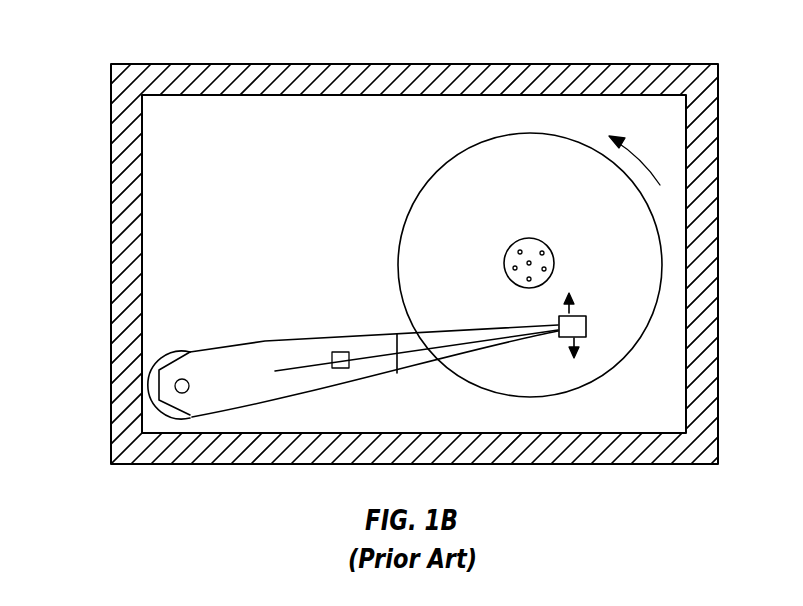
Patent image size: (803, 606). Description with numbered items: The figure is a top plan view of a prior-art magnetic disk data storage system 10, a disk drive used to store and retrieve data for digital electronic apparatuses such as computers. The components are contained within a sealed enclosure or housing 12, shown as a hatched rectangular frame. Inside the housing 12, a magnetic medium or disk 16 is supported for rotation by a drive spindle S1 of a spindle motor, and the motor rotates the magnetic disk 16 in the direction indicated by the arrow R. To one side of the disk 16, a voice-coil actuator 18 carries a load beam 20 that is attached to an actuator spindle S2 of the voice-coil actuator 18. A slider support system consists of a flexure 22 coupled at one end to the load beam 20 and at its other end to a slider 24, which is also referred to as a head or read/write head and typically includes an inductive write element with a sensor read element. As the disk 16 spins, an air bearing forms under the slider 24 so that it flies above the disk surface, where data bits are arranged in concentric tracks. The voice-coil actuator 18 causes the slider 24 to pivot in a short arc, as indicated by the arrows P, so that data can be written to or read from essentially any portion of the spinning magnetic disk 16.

The magnetic disk data storage system 10 is at (129, 60).
The housing 12 is at (620, 63).
The magnetic disk 16 is at (547, 186).
The voice-coil actuator 18 is at (173, 352).
The load beam 20 is at (278, 340).
The flexure 22 is at (420, 367).
The slider 24 is at (578, 318).
The drive spindle S1 is at (535, 244).
The actuator spindle S2 is at (190, 385).
The arrow R is at (625, 153).
The arrows P is at (571, 330).